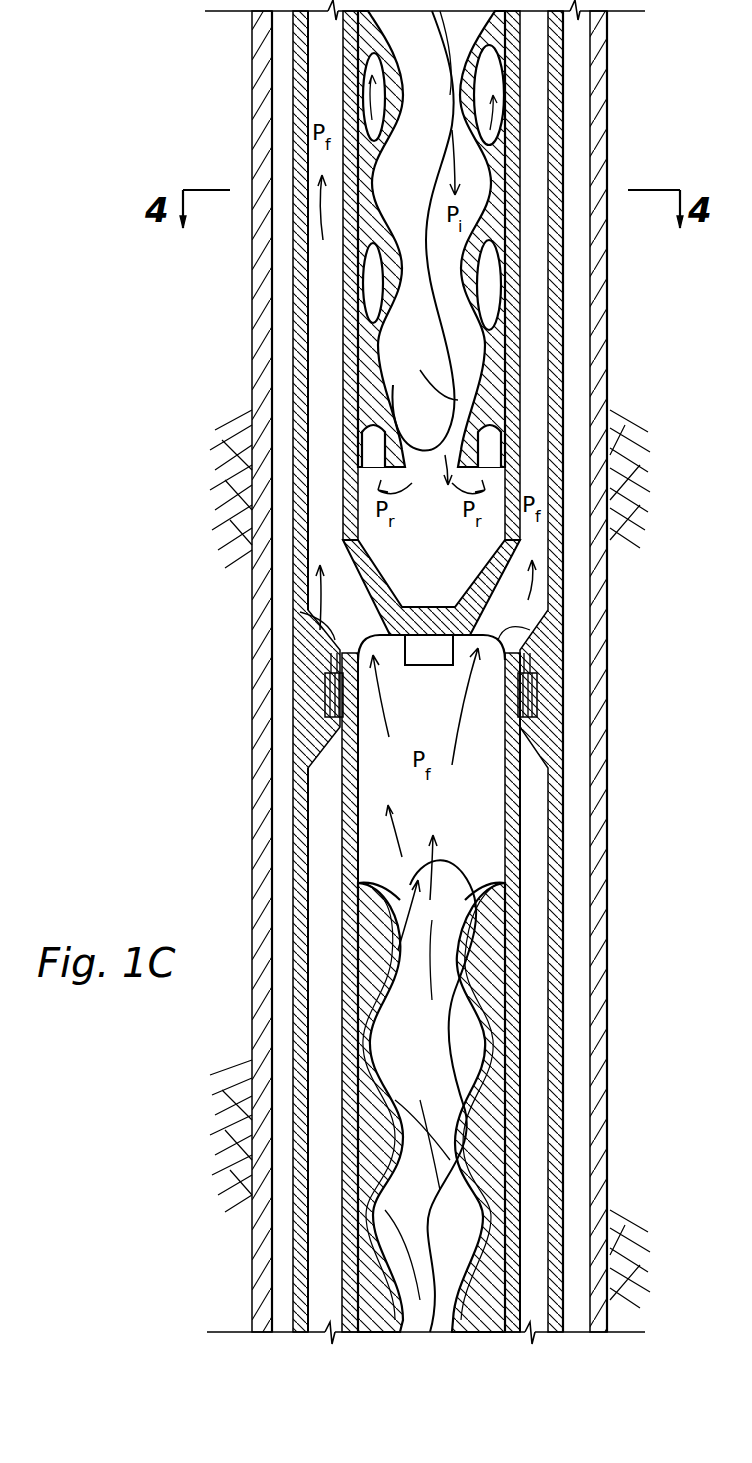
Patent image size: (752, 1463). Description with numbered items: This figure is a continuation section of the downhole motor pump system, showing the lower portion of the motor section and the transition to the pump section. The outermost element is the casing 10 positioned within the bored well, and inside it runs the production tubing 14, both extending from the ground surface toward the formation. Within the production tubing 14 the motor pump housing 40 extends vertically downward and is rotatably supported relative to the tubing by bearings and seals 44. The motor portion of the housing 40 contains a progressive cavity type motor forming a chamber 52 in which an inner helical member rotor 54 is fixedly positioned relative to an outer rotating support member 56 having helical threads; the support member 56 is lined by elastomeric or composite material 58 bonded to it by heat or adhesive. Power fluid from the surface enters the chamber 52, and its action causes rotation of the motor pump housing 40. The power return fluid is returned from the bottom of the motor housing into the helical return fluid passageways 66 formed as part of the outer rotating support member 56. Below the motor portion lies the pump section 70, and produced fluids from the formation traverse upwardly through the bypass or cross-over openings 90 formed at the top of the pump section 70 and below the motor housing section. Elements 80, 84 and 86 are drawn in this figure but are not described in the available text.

The casing 10 is at (255, 100).
The production tubing 14 is at (555, 143).
The motor pump housing 40 is at (512, 290).
The bearings and seals 44 is at (525, 700).
The chamber 52 is at (490, 175).
The inner helical member rotor 54 is at (352, 235).
The outer rotating support member 56 is at (352, 362).
The elastomeric or composite material 58 is at (470, 372).
The helical return fluid passageways 66 is at (493, 75).
The pump section 70 is at (527, 985).
The lower valve sleeve 80 is at (455, 1200).
The elastomeric sleeve body 84 is at (490, 1110).
The sleeve upper end 86 is at (500, 905).
The bypass or cross-over openings 90 is at (345, 625).